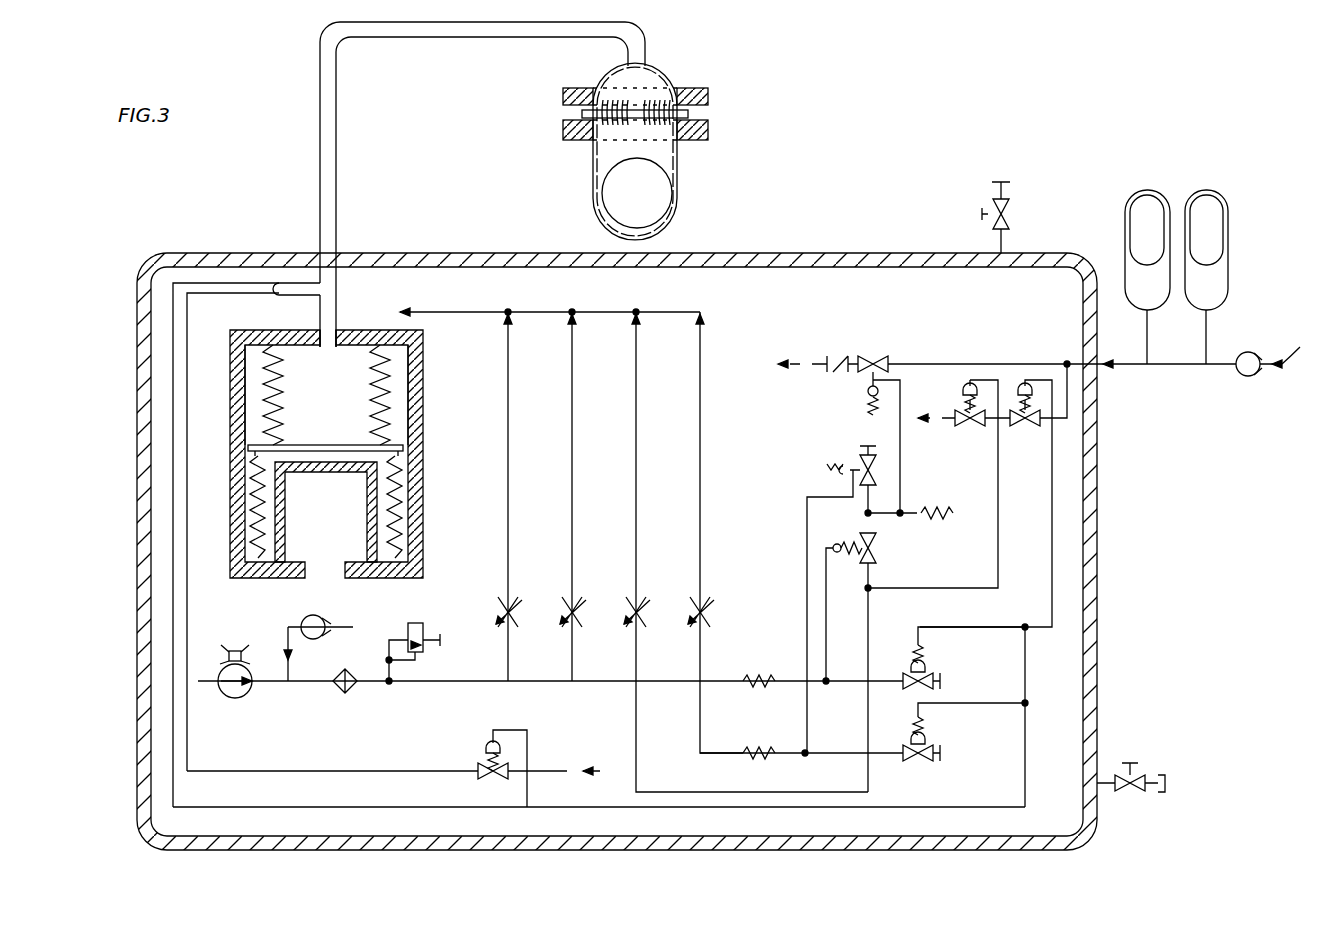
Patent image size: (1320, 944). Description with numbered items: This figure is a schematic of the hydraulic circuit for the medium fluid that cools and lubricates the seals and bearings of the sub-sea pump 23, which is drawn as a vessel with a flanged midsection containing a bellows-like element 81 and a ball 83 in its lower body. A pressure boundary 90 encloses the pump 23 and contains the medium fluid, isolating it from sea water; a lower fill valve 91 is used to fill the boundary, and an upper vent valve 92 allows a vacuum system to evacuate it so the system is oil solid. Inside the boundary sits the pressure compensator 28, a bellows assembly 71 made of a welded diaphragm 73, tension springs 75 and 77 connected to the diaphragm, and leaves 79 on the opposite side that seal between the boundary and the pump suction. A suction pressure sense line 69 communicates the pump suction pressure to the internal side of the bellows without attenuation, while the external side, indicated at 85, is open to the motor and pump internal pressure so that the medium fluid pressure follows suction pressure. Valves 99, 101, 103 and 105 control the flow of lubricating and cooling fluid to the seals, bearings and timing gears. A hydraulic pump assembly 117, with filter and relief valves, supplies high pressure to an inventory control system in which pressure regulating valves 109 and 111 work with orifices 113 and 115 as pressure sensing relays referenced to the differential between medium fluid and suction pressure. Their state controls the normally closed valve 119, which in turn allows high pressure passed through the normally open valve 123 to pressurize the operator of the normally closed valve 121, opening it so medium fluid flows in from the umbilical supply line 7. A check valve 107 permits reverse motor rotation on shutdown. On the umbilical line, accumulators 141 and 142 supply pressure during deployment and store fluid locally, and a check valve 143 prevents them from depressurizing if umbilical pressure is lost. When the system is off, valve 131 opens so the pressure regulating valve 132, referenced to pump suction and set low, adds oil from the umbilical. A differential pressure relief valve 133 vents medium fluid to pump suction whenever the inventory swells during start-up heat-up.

The umbilical supply line 7 is at (1293, 353).
The pump 23 is at (677, 147).
The pressure compensator 28 is at (220, 364).
The suction pressure sense line 69 is at (405, 37).
The bellows assembly 71 is at (263, 410).
The diaphragm 73 is at (405, 447).
The spring 75 is at (255, 498).
The spring 77 is at (395, 498).
The leaf 79 is at (268, 365).
The bellows 81 is at (657, 103).
The ball 83 is at (605, 190).
The external side of the bellows assembly 85 is at (410, 314).
The pressure boundary 90 is at (1095, 517).
The lower fill valve 91 is at (1138, 795).
The upper vent valve 92 is at (1010, 207).
The valve 99 is at (514, 604).
The valve 101 is at (578, 604).
The valve 103 is at (642, 604).
The valve 105 is at (706, 604).
The check valve 107 is at (302, 618).
The pressure regulating valve 109 is at (930, 673).
The pressure regulating valve 111 is at (925, 762).
The orifice 113 is at (770, 675).
The orifice 115 is at (770, 747).
The hydraulic pump assembly 117 is at (240, 700).
The valve 119 is at (862, 462).
The valve 121 is at (880, 358).
The valve 123 is at (878, 555).
The valve 131 is at (975, 428).
The pressure regulating valve 132 is at (1025, 432).
The differential pressure relief valve 133 is at (483, 765).
The accumulator 141 is at (1143, 200).
The accumulator 142 is at (1203, 200).
The check valve 143 is at (1240, 352).